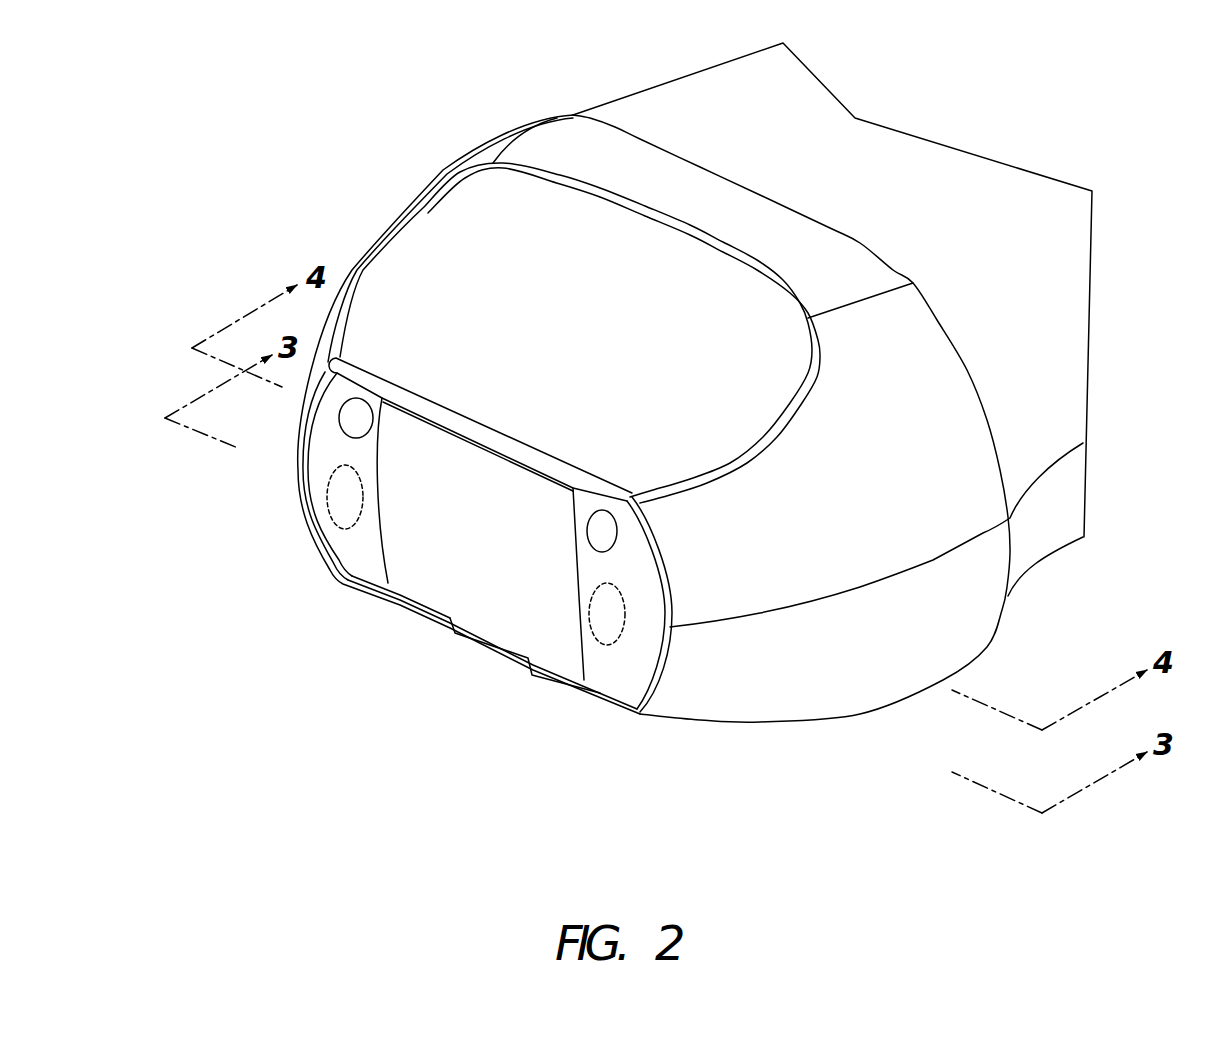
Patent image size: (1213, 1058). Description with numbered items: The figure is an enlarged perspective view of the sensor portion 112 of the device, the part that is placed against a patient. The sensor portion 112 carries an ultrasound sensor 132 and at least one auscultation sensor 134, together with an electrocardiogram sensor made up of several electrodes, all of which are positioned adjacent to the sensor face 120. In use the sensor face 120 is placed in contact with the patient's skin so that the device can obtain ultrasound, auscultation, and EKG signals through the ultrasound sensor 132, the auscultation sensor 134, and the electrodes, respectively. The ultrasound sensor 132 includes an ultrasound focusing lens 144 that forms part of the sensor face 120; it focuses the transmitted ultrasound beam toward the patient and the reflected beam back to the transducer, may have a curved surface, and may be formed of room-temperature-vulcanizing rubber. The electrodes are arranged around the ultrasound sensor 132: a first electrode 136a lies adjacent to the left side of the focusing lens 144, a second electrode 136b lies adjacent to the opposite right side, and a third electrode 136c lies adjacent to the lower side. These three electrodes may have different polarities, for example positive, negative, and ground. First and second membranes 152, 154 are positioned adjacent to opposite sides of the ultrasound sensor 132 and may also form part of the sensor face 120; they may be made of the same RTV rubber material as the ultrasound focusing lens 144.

The sensor portion 112 is at (338, 173).
The sensor face 120 is at (568, 703).
The ultrasound sensor 132 is at (478, 588).
The auscultation sensor 134 is at (326, 495).
The first electrode 136a is at (357, 398).
The second electrode 136b is at (594, 509).
The third electrode 136c is at (510, 653).
The ultrasound focusing lens 144 is at (410, 579).
The first membrane 152 is at (318, 453).
The second membrane 154 is at (623, 668).